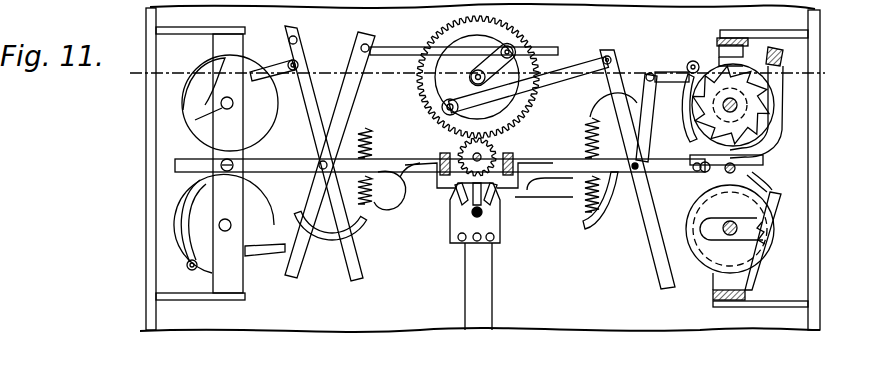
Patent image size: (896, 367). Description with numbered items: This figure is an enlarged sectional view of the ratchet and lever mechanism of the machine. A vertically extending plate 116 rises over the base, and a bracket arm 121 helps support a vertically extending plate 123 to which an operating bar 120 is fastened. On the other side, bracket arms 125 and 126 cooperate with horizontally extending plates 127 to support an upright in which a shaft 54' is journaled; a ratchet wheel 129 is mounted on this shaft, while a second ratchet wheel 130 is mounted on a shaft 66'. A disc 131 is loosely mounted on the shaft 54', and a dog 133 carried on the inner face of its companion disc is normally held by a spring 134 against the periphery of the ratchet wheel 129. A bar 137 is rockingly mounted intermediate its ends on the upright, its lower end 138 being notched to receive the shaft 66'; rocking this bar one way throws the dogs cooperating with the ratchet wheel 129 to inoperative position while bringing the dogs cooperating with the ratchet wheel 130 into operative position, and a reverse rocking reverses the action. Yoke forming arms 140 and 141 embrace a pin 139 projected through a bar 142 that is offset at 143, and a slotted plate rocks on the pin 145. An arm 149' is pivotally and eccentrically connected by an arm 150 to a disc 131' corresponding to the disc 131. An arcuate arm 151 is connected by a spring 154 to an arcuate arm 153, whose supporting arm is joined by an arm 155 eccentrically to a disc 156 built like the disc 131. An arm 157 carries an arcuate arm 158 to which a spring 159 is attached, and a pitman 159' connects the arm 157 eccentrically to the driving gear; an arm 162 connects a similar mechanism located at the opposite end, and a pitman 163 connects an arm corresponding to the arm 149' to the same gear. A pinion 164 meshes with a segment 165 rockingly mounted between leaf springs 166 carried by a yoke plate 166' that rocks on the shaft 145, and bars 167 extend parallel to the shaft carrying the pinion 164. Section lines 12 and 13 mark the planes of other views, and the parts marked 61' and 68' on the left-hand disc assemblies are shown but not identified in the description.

The section line 12 is at (127, 62).
The section line 13 is at (573, 305).
The shaft 54' is at (793, 106).
The cam 61' is at (160, 110).
The shaft 66' is at (782, 221).
The pin 68' is at (162, 185).
The plate 116 is at (478, 312).
The operating bar 120 is at (166, 176).
The bracket arm 121 is at (176, 298).
The vertically extending plate 123 is at (226, 283).
The bracket arm 125 is at (806, 303).
The bracket arm 126 is at (806, 36).
The horizontally extending plate 127 is at (726, 40).
The ratchet wheel 129 is at (762, 122).
The ratchet wheel 130 is at (762, 240).
The disc 131 is at (780, 105).
The disc 131' is at (182, 223).
The dog 133 is at (689, 63).
The spring 134 is at (682, 68).
The bar 137 is at (770, 180).
The lower end of bar 138 is at (757, 262).
The pin 139 is at (746, 162).
The yoke forming arm 140 is at (691, 152).
The yoke forming arm 141 is at (636, 236).
The bar 142 is at (594, 238).
The offset portion 143 is at (512, 205).
The pin 145 is at (462, 250).
The arm 149' is at (292, 268).
The arm 150 is at (266, 266).
The arcuate arm 151 is at (358, 238).
The arcuate arm 153 is at (365, 136).
The spring 154 is at (370, 151).
The arm 155 is at (289, 62).
The disc 156 is at (192, 118).
The arm 157 is at (296, 31).
The arcuate arm 158 is at (380, 230).
The spring 159 is at (387, 193).
The pitman 159' is at (464, 33).
The arm 162 is at (506, 47).
The pitman 163 is at (518, 96).
The pinion 164 is at (492, 150).
The segment 165 is at (452, 216).
The leaf springs 166 is at (490, 184).
The yoke plate 166' is at (438, 230).
The bars 167 is at (514, 162).